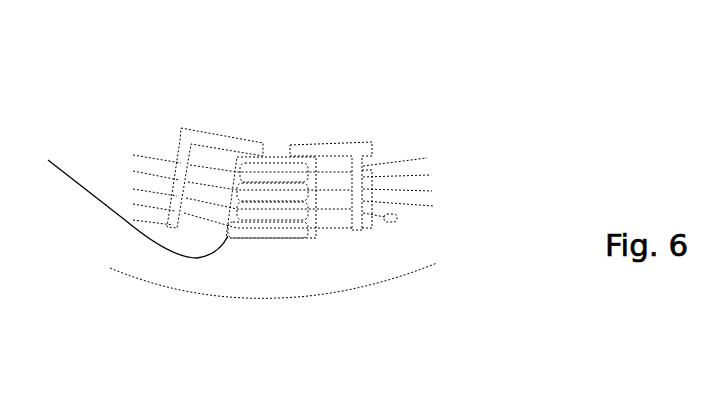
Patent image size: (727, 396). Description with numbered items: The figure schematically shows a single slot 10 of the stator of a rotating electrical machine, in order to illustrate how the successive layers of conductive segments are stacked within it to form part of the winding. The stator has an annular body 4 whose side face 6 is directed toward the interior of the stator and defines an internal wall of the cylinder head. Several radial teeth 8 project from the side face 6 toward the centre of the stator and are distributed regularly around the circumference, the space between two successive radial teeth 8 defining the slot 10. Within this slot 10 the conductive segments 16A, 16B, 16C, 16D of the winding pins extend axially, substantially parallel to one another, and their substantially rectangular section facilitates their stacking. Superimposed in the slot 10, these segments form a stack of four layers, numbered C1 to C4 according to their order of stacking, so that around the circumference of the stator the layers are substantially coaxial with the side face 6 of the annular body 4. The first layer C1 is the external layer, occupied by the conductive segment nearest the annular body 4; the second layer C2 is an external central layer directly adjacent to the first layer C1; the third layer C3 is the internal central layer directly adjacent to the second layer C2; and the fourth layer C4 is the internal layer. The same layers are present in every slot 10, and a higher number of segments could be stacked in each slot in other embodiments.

The annular body 4 is at (190, 273).
The side face 6 is at (129, 200).
The radial teeth 8 is at (332, 193).
The slot 10 is at (278, 156).
The conductive segment 16A is at (268, 231).
The conductive segment 16B is at (272, 212).
The conductive segment 16C is at (272, 192).
The conductive segment 16D is at (274, 173).
The first layer C1 is at (425, 217).
The second layer C2 is at (427, 200).
The third layer C3 is at (428, 180).
The fourth layer C4 is at (427, 158).